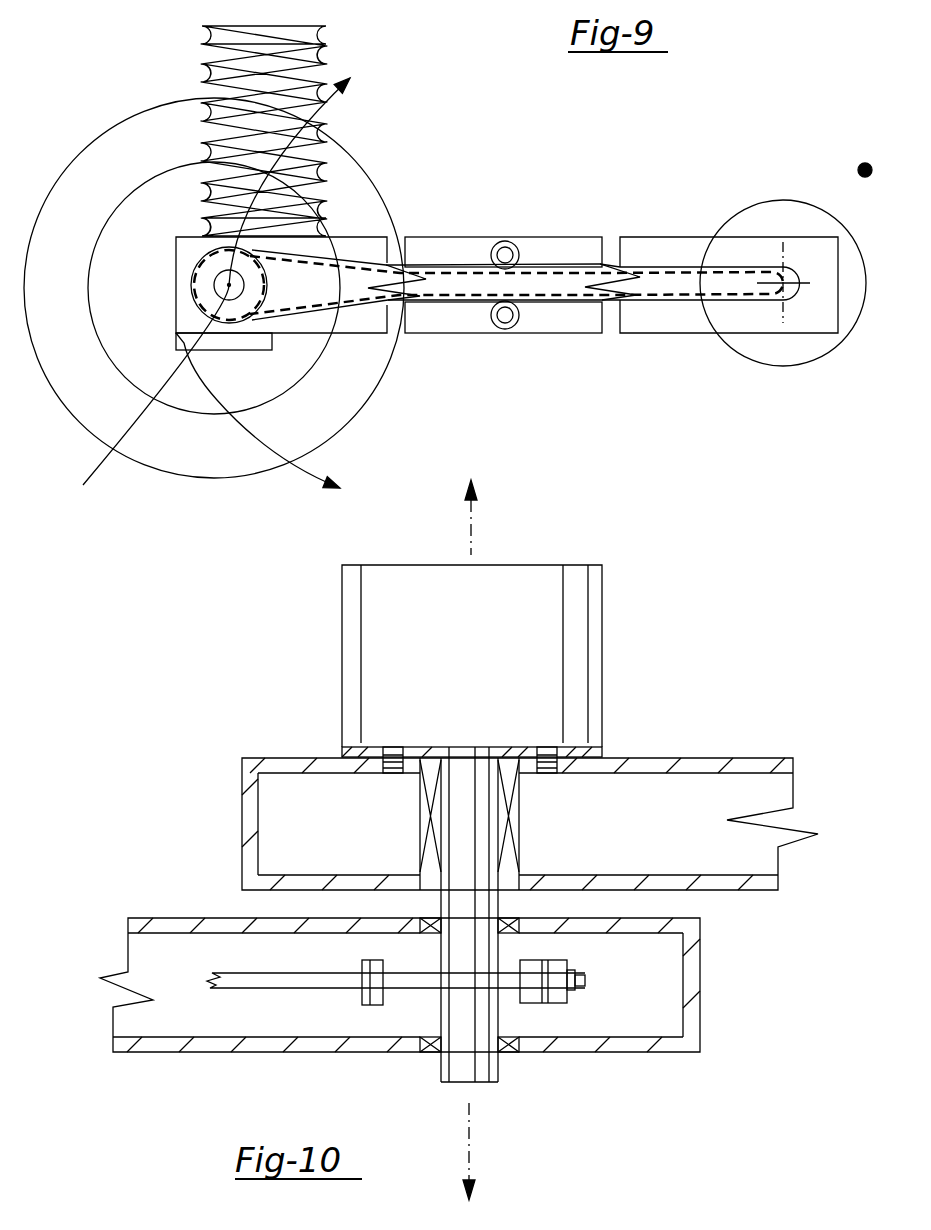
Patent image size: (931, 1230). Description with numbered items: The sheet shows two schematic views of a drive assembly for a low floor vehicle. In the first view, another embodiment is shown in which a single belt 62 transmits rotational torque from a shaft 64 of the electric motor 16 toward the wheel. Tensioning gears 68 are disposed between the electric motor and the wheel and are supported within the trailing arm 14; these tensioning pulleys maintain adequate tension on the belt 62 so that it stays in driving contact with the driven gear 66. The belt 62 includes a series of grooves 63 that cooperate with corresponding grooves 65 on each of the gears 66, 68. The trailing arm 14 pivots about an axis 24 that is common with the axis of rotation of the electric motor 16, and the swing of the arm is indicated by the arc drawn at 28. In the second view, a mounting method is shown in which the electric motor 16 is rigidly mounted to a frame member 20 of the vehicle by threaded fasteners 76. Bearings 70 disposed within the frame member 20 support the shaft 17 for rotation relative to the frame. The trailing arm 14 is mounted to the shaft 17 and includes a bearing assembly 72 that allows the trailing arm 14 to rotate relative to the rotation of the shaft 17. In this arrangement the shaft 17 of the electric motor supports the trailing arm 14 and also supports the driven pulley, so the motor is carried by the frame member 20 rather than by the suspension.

In FIG. 9, the trailing arm 14 is at (460, 237).
In FIG. 10, the trailing arm 14 is at (260, 1050).
In FIG. 9, the electric motor 16 is at (753, 222).
In FIG. 10, the electric motor 16 is at (370, 630).
In FIG. 10, the shaft 17 is at (483, 1068).
In FIG. 10, the frame member 20 is at (690, 763).
In FIG. 9, the axis 24 is at (773, 292).
In FIG. 10, the axis 24 is at (467, 1148).
In FIG. 9, the swing arc 28 is at (283, 435).
In FIG. 9, the belt 62 is at (553, 303).
In FIG. 9, the grooves 63 is at (345, 256).
In FIG. 9, the shaft 64 is at (800, 272).
In FIG. 9, the grooves 65 is at (262, 293).
In FIG. 9, the driven gear 66 is at (195, 292).
In FIG. 9, the tensioning gears 68 is at (503, 241).
In FIG. 10, the bearings 70 is at (517, 812).
In FIG. 10, the bearing assembly 72 is at (520, 920).
In FIG. 10, the threaded fasteners 76 is at (550, 750).